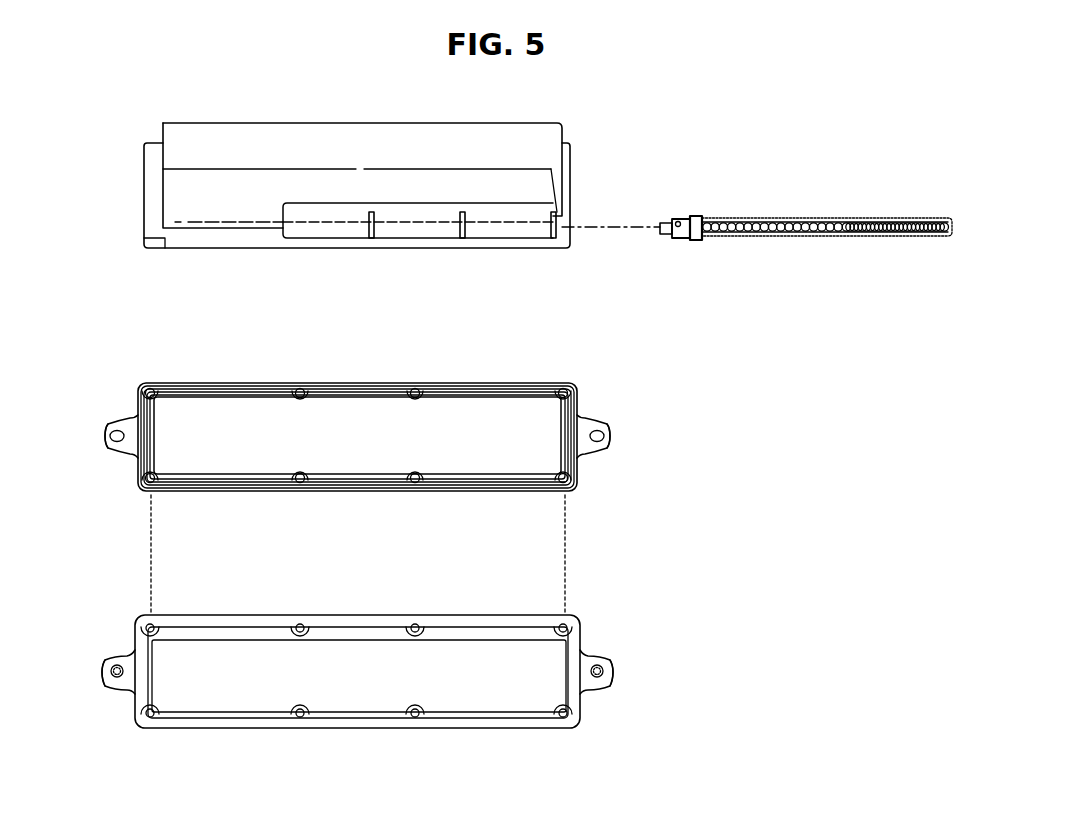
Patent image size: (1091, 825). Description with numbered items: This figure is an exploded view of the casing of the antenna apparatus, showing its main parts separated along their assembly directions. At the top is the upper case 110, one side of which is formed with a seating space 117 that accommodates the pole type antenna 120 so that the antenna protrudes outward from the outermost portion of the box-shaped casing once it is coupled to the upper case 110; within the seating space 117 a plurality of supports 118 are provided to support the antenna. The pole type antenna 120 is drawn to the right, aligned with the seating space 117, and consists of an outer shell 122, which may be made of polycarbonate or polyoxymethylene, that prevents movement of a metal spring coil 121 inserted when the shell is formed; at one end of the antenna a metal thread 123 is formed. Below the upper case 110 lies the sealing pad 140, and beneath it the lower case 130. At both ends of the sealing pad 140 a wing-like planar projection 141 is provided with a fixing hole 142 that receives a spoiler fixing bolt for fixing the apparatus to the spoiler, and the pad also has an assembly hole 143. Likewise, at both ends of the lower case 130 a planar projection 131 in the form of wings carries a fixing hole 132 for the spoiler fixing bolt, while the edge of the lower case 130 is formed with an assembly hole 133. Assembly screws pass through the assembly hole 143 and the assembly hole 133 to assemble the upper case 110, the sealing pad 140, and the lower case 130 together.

The upper case 110 is at (536, 130).
The seating space 117 is at (315, 229).
The supports 118 is at (372, 240).
The pole type antenna 120 is at (802, 203).
The spring coil 121 is at (753, 232).
The outer shell 122 is at (830, 235).
The metal thread 123 is at (661, 222).
The lower case 130 is at (357, 696).
The planar projection 131 is at (117, 680).
The fixing hole 132 is at (108, 667).
The assembly hole 133 is at (469, 728).
The sealing pad 140 is at (357, 462).
The planar projection 141 is at (117, 445).
The fixing hole 142 is at (108, 432).
The assembly hole 143 is at (470, 491).